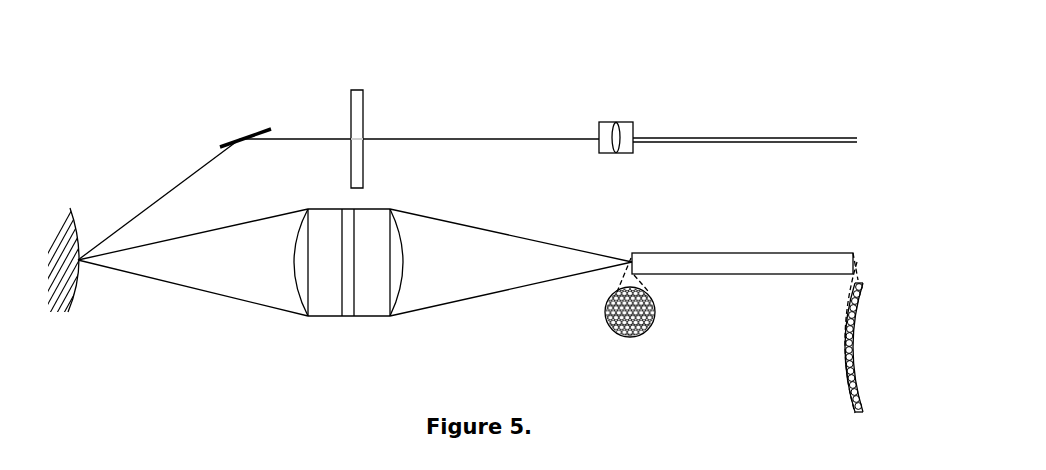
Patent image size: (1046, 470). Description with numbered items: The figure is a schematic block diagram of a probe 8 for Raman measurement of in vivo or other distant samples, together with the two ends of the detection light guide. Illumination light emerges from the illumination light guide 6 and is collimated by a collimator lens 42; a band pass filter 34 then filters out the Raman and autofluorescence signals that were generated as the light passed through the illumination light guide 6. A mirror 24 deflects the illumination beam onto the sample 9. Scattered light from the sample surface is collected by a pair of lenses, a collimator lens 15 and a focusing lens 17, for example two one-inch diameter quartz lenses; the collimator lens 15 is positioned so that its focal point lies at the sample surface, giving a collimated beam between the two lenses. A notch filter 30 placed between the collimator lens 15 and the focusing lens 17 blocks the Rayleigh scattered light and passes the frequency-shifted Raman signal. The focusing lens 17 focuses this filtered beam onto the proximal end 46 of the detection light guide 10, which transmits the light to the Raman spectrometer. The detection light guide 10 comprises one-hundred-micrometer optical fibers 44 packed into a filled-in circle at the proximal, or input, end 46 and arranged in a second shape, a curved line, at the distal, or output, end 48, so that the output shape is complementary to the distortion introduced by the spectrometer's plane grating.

The illumination light guide 6 is at (728, 137).
The probe 8 is at (482, 103).
The sample 9 is at (72, 212).
The detection light guide 10 is at (753, 251).
The collimator lens 15 is at (304, 207).
The focusing lens 17 is at (395, 210).
The mirror 24 is at (237, 130).
The notch filter 30 is at (375, 270).
The band pass filter 34 is at (363, 90).
The collimator lens 42 is at (618, 122).
The optical fibers 44 is at (655, 303).
The proximal end 46 is at (635, 246).
The distal end 48 is at (857, 247).